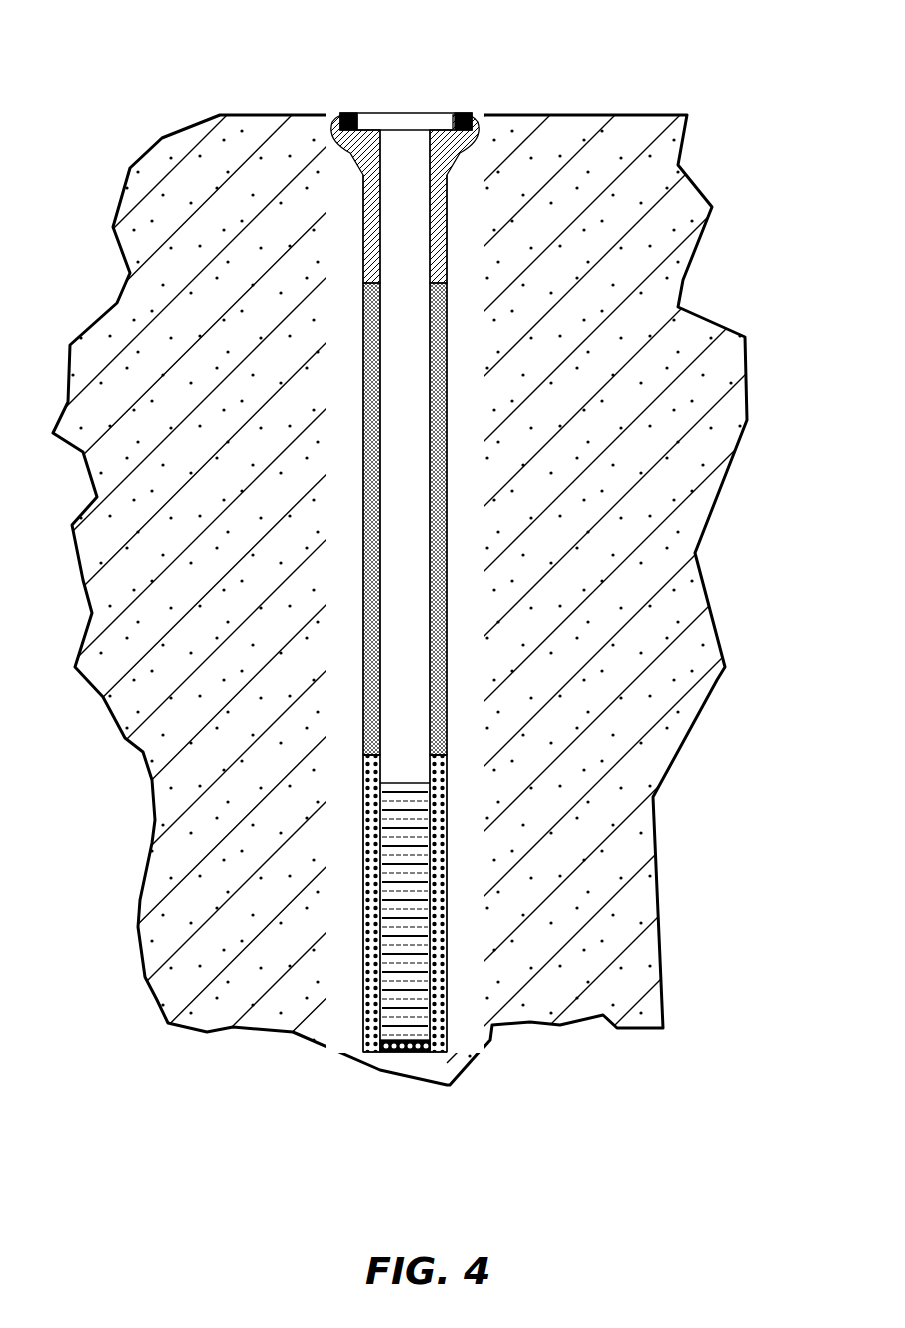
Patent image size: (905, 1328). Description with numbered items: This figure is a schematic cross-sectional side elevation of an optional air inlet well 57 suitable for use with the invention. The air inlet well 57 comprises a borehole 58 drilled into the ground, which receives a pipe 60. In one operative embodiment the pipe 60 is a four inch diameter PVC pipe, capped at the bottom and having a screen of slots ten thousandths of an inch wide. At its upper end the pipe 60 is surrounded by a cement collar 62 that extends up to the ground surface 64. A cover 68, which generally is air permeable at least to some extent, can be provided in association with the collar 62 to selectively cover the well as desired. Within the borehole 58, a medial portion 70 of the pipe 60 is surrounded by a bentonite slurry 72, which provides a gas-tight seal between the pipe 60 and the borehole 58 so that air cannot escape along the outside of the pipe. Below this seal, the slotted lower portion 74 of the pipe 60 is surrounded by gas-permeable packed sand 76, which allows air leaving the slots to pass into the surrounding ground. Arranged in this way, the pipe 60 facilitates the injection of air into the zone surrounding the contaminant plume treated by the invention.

The air inlet well 57 is at (487, 542).
The borehole 58 is at (447, 950).
The pipe 60 is at (441, 757).
The cement collar 62 is at (358, 220).
The ground surface 64 is at (242, 115).
The cover 68 is at (415, 113).
The medial portion 70 is at (410, 422).
The bentonite slurry 72 is at (440, 633).
The slotted lower portion 74 is at (400, 948).
The gas-permeable packed sand 76 is at (432, 838).